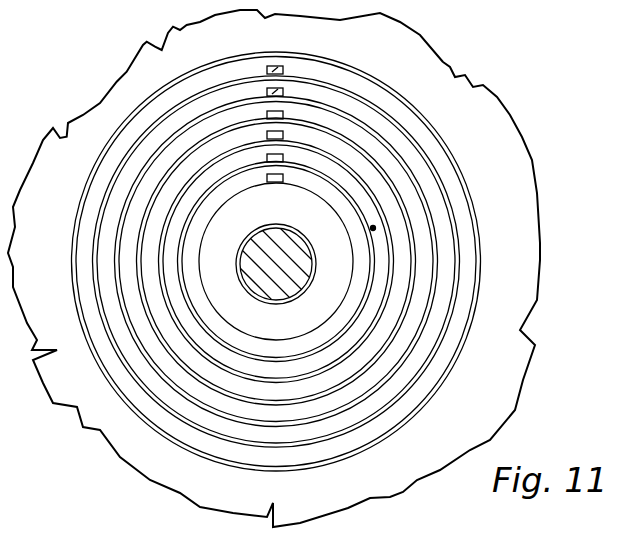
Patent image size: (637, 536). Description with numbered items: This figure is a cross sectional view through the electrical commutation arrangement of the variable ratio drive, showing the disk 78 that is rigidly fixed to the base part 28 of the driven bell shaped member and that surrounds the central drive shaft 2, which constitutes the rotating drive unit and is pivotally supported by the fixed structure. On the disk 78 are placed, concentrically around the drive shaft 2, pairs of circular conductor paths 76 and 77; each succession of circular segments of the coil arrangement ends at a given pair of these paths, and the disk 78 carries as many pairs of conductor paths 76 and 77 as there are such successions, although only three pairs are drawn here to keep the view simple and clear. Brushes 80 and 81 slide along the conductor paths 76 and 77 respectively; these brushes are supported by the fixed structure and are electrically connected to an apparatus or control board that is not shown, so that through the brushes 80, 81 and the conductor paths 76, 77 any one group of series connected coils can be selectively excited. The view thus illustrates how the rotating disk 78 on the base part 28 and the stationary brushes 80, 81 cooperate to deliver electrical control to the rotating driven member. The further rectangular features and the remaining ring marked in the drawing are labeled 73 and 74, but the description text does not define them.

The drive shaft 2 is at (258, 250).
The base part 28 is at (522, 338).
The recesses 73 is at (280, 66).
The ribs 74 is at (293, 90).
The circular conductor path 76 is at (360, 143).
The circular conductor path 77 is at (368, 173).
The disk 78 is at (484, 241).
The brush 80 is at (267, 68).
The brush 81 is at (266, 92).